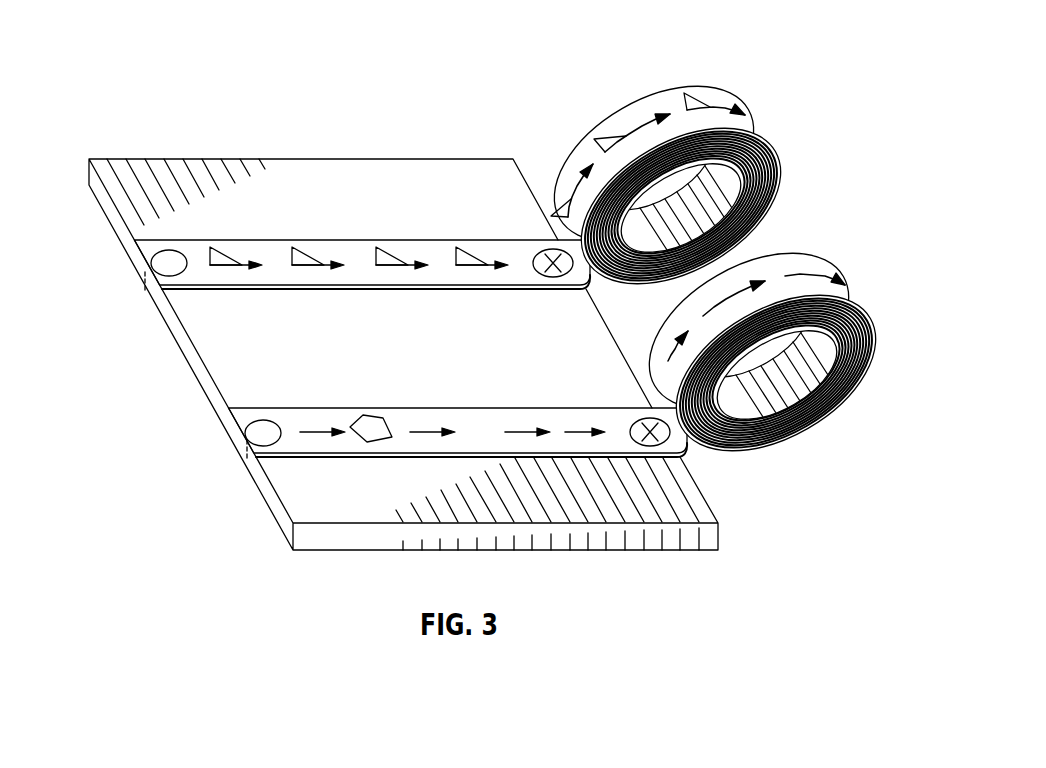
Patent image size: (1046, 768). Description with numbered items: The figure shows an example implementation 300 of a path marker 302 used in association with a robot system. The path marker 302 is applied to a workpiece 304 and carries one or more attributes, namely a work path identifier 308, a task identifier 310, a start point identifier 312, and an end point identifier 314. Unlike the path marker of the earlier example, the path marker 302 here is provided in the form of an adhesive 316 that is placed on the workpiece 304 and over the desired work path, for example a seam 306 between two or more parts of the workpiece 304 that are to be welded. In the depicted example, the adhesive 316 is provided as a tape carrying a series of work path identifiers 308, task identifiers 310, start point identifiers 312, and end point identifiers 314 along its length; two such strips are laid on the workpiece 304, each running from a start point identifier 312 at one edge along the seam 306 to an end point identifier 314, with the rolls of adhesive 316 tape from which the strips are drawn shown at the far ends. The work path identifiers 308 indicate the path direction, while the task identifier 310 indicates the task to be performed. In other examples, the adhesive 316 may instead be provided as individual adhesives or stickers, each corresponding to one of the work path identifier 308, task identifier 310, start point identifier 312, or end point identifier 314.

The example implementation 300 is at (128, 80).
The path marker 302 is at (350, 215).
The workpiece 304 is at (192, 364).
The seam 306 is at (143, 281).
The work path identifier 308 is at (338, 268).
The task identifier 310 is at (300, 247).
The start point identifier 312 is at (172, 250).
The end point identifier 314 is at (543, 252).
The adhesive 316 is at (666, 92).